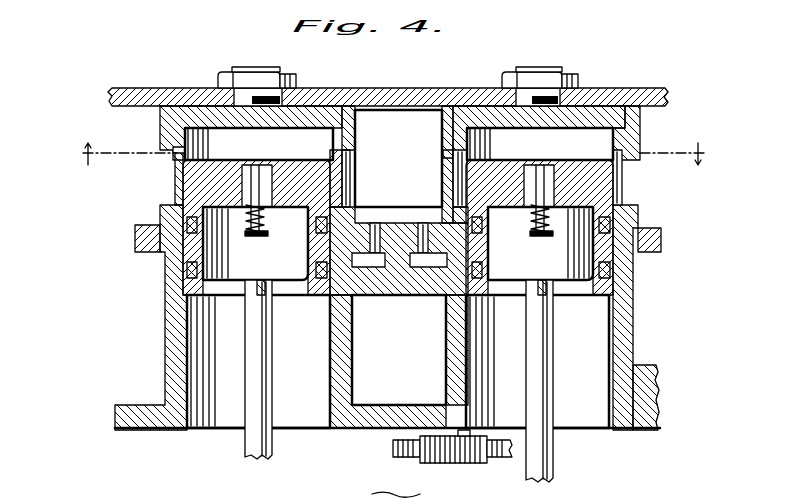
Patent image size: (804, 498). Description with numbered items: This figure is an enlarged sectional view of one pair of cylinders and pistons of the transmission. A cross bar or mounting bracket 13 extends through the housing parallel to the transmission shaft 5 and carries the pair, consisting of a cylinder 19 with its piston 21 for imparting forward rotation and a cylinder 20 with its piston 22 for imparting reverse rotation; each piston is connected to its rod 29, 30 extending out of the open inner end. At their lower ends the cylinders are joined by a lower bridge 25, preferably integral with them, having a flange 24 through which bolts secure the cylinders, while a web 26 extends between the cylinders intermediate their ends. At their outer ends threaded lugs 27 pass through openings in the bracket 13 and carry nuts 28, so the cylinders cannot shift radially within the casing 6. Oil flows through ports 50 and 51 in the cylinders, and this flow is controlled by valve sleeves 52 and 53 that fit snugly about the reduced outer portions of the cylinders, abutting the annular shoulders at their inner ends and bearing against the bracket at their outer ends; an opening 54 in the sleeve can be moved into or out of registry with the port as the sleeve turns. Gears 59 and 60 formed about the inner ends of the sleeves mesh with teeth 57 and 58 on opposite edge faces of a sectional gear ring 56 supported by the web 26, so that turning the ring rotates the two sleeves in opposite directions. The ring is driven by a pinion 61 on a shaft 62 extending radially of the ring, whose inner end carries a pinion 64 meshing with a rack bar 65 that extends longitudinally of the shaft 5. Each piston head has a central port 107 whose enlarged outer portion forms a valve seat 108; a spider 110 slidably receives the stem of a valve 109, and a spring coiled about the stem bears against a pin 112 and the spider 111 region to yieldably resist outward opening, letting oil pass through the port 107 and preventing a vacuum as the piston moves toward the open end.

The shaft 5 is at (390, 155).
The casing 6 is at (626, 92).
The mounting bracket 13 is at (150, 88).
The cylinder 19 is at (170, 315).
The cylinder 20 is at (624, 327).
The piston 21 is at (274, 348).
The piston 22 is at (598, 300).
The flange 24 is at (656, 377).
The lower bridge 25 is at (372, 421).
The web 26 is at (399, 350).
The threaded lug 27 is at (258, 67).
The nut 28 is at (297, 80).
The left piston rod 29 is at (263, 399).
The right piston rod 30 is at (546, 368).
The port 50 is at (182, 153).
The port 51 is at (458, 163).
The sleeve 52 is at (160, 118).
The sleeve 53 is at (642, 120).
The opening 54 is at (165, 192).
The gear ring 56 is at (388, 208).
The teeth 57 is at (376, 268).
The teeth 58 is at (423, 222).
The gear 59 is at (138, 248).
The gear 60 is at (662, 240).
The pinion 61 is at (443, 216).
The shaft 62 is at (446, 356).
The pinion 64 is at (455, 463).
The rack bar 65 is at (504, 458).
The port 107 is at (223, 161).
The valve seat 108 is at (279, 166).
The valve 109 is at (249, 160).
The spider 110 is at (269, 201).
The inner chamber liner 111 is at (255, 228).
The pin 112 is at (263, 237).